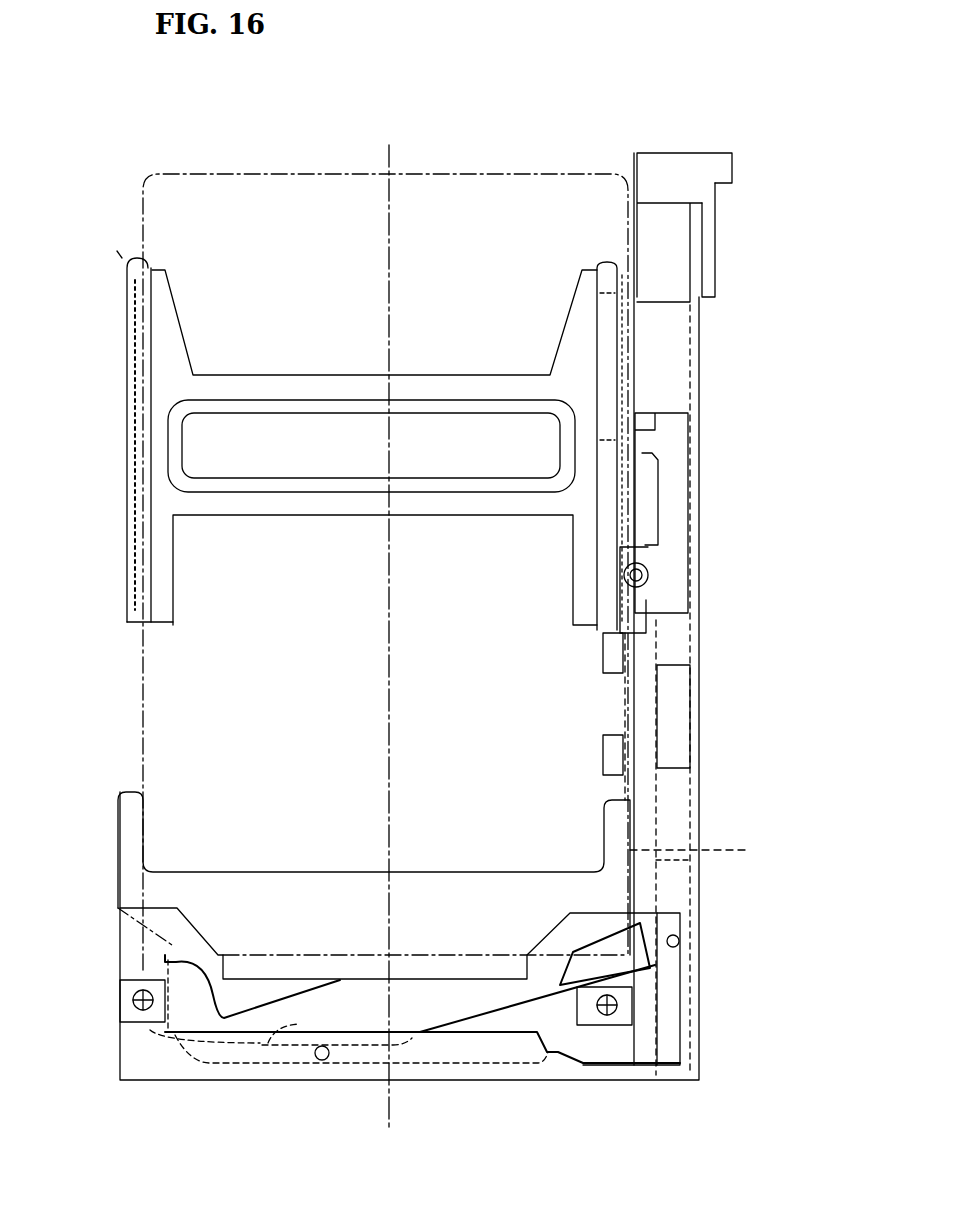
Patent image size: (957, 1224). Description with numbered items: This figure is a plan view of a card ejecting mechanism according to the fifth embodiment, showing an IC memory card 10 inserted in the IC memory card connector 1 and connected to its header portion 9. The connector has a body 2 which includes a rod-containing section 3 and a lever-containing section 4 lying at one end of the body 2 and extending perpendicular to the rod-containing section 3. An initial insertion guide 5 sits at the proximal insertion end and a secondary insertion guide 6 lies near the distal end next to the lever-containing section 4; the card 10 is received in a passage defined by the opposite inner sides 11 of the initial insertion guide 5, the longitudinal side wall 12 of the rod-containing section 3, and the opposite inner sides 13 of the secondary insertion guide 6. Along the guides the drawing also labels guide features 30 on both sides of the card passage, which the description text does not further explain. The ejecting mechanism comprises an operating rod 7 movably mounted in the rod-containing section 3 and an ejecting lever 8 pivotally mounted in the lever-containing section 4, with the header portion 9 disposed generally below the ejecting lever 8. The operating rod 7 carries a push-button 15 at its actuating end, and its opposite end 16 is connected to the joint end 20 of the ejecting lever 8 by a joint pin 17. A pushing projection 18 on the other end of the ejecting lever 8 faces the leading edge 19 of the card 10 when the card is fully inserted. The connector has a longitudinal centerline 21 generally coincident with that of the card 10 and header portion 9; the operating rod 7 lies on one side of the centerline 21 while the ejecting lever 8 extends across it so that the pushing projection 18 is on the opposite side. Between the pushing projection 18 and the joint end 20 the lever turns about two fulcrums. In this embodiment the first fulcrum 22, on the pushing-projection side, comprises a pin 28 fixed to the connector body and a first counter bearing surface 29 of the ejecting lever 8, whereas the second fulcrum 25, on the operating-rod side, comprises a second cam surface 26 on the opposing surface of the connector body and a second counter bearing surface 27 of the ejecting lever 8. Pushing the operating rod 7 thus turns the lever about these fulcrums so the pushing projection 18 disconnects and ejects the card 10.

The IC memory card connector 1 is at (723, 572).
The body 2 is at (703, 817).
The rod-containing section 3 is at (669, 384).
The lever-containing section 4 is at (497, 1020).
The initial insertion guide 5 is at (240, 387).
The secondary insertion guide 6 is at (255, 897).
The operating rod 7 is at (662, 282).
The ejecting lever 8 is at (408, 1000).
The header portion 9 is at (210, 966).
The IC memory card 10 is at (455, 247).
The inner sides of the initial insertion guide 11 is at (127, 450).
The longitudinal side wall 12 is at (613, 668).
The inner sides of the secondary insertion guide 13 is at (701, 852).
The push-button 15 is at (668, 168).
The opposite end of the operating rod 16 is at (673, 962).
The joint pin 17 is at (683, 935).
The pushing projection 18 is at (140, 965).
The leading edge 19 is at (110, 905).
The joint end 20 is at (655, 967).
The longitudinal centerline 21 is at (395, 183).
The first fulcrum 22 is at (303, 1067).
The second fulcrum 25 is at (555, 1060).
The second cam surface 26 is at (538, 1052).
The second counter bearing surface 27 is at (555, 1027).
The pin 28 is at (322, 1062).
The first counter bearing surface 29 is at (250, 1070).
The guide groove 30 is at (127, 312).